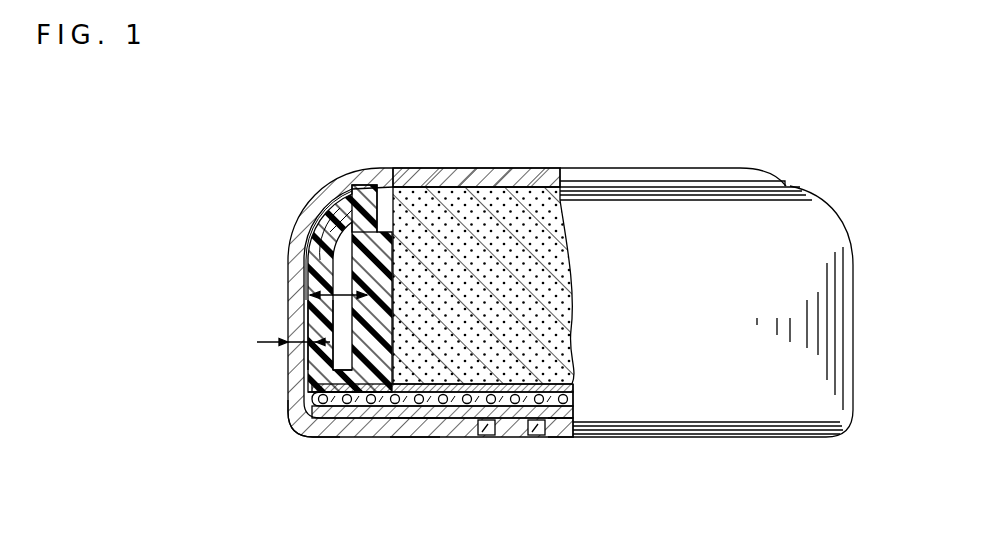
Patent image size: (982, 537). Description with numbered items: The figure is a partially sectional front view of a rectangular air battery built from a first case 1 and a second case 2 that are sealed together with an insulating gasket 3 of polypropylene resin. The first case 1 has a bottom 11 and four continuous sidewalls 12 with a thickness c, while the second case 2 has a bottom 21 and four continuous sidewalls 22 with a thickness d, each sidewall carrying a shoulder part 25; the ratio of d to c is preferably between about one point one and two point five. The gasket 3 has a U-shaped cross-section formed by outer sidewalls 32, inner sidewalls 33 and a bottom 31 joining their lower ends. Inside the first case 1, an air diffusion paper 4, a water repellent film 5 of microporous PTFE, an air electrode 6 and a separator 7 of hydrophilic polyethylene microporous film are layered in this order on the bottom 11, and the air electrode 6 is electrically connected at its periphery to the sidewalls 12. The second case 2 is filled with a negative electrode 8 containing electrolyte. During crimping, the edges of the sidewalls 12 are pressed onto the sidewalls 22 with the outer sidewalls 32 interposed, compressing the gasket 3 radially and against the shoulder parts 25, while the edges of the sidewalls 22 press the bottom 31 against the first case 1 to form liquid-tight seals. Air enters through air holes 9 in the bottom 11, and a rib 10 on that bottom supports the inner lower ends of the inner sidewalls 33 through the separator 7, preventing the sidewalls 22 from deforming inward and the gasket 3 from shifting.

The first case 1 is at (300, 413).
The second case 2 is at (632, 175).
The insulating gasket 3 is at (315, 233).
The air diffusion paper 4 is at (562, 437).
The water repellent film 5 is at (447, 420).
The air electrode 6 is at (572, 395).
The separator 7 is at (548, 382).
The negative electrode 8 is at (520, 215).
The air holes 9 is at (483, 437).
The rib 10 is at (410, 438).
The bottom 11 is at (320, 432).
The sidewalls 12 is at (323, 208).
The bottom 21 is at (447, 178).
The sidewalls 22 is at (300, 338).
The shoulder part 25 is at (320, 247).
The bottom 31 is at (338, 378).
The outer sidewalls 32 is at (343, 217).
The inner sidewalls 33 is at (378, 265).
The thickness of the sidewalls of the first case c is at (285, 337).
The thickness of the sidewalls of the second case d is at (300, 294).